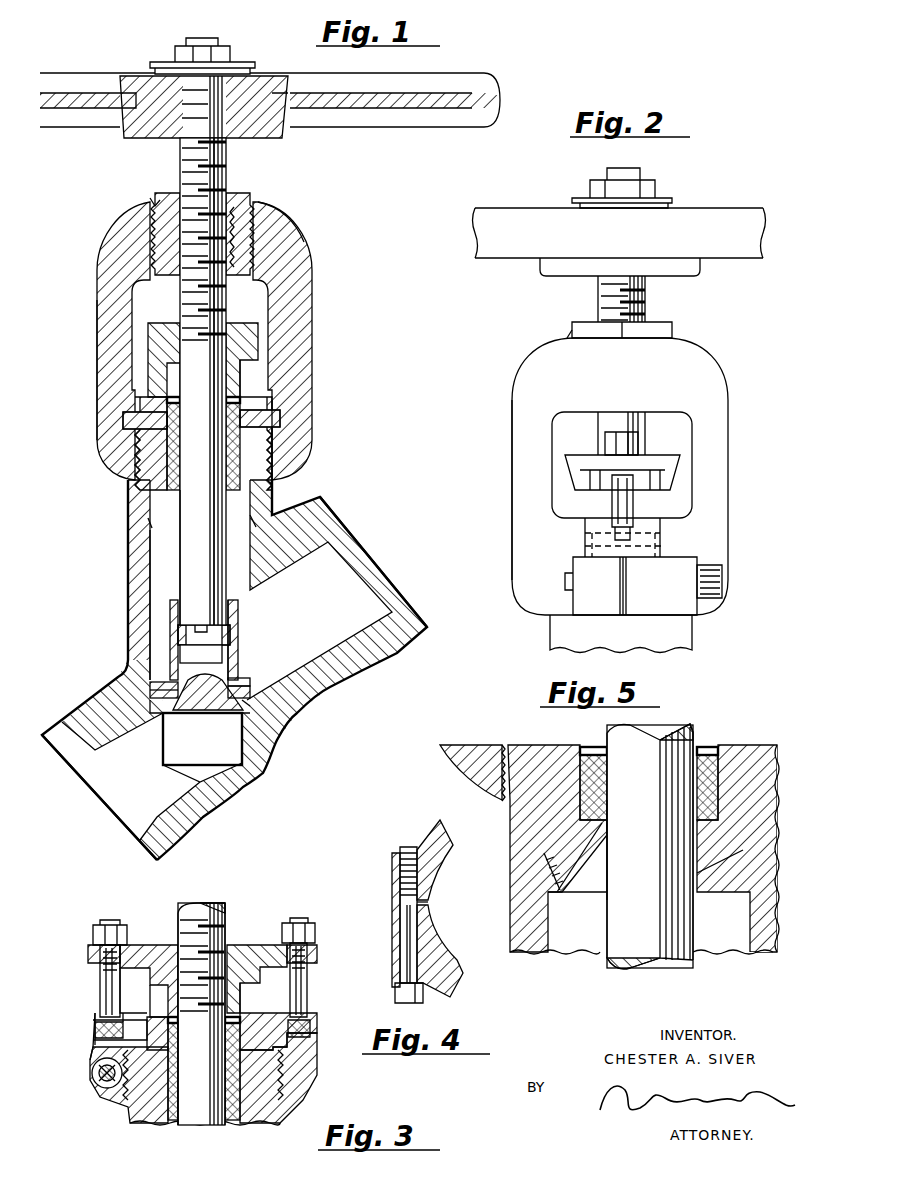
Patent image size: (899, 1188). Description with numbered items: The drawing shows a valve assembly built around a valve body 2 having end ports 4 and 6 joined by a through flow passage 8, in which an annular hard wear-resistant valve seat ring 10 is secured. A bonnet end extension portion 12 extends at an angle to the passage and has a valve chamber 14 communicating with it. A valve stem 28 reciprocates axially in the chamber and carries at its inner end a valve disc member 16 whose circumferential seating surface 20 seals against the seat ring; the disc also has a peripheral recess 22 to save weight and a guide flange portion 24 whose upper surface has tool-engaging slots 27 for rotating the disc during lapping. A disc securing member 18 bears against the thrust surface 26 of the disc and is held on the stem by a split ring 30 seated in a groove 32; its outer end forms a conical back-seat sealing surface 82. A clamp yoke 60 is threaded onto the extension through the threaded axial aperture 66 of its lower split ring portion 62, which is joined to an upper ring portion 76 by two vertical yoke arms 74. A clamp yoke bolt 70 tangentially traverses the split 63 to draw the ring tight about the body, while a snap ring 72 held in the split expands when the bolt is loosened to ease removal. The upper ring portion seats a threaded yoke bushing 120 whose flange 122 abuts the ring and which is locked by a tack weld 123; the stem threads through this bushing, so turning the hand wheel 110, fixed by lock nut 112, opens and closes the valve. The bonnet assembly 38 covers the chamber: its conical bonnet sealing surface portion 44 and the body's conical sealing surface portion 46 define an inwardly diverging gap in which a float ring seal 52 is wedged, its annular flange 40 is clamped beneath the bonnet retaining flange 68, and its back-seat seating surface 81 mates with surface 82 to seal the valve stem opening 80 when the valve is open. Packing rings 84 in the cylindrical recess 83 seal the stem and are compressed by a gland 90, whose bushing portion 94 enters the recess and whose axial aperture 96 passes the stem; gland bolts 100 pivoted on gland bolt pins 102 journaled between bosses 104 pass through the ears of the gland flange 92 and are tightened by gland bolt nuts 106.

In FIG. 1, the valve body 2 is at (257, 780).
In FIG. 1, the end port 4 is at (118, 782).
In FIG. 1, the end port 6 is at (355, 575).
In FIG. 1, the through flow passage 8 is at (207, 742).
In FIG. 1, the valve seat ring 10 is at (277, 733).
In FIG. 1, the bonnet end extension portion 12 is at (137, 571).
In FIG. 3, the bonnet end extension portion 12 is at (128, 1115).
In FIG. 1, the valve chamber 14 is at (173, 557).
In FIG. 1, the valve disc member 16 is at (200, 680).
In FIG. 1, the disc securing member 18 is at (238, 613).
In FIG. 1, the seating surface 20 is at (250, 703).
In FIG. 1, the peripheral recess 22 is at (245, 690).
In FIG. 1, the guide flange portion 24 is at (152, 683).
In FIG. 1, the thrust surface 26 is at (200, 663).
In FIG. 1, the tool-engaging slots 27 is at (240, 680).
In FIG. 1, the valve stem 28 is at (209, 562).
In FIG. 2, the valve stem 28 is at (645, 292).
In FIG. 5, the valve stem 28 is at (653, 897).
In FIG. 3, the valve stem 28 is at (208, 1087).
In FIG. 1, the split ring 30 is at (178, 635).
In FIG. 1, the groove 32 is at (197, 627).
In FIG. 1, the bonnet assembly 38 is at (155, 453).
In FIG. 3, the bonnet assembly 38 is at (158, 1103).
In FIG. 1, the annular flange 40 is at (138, 421).
In FIG. 3, the annular flange 40 is at (142, 1047).
In FIG. 1, the bonnet sealing surface portion 44 is at (252, 523).
In FIG. 5, the bonnet sealing surface portion 44 is at (552, 881).
In FIG. 5, the sealing surface portion 46 is at (565, 873).
In FIG. 1, the float ring seal 52 is at (153, 523).
In FIG. 5, the float ring seal 52 is at (553, 893).
In FIG. 1, the clamp yoke 60 is at (10, 248).
In FIG. 2, the clamp yoke 60 is at (485, 367).
In FIG. 1, the lower split ring portion 62 is at (300, 440).
In FIG. 2, the lower split ring portion 62 is at (527, 582).
In FIG. 5, the lower split ring portion 62 is at (472, 756).
In FIG. 4, the lower split ring portion 62 is at (432, 830).
In FIG. 3, the lower split ring portion 62 is at (112, 1097).
In FIG. 2, the split 63 is at (624, 602).
In FIG. 4, the split 63 is at (420, 904).
In FIG. 1, the threaded axial aperture 66 is at (278, 458).
In FIG. 5, the threaded axial aperture 66 is at (506, 756).
In FIG. 3, the threaded axial aperture 66 is at (283, 1077).
In FIG. 1, the bonnet retaining flange 68 is at (140, 402).
In FIG. 3, the bonnet retaining flange 68 is at (137, 1020).
In FIG. 2, the clamp yoke bolt 70 is at (710, 578).
In FIG. 4, the clamp yoke bolt 70 is at (403, 990).
In FIG. 3, the clamp yoke bolt 70 is at (95, 1075).
In FIG. 2, the snap ring 72 is at (620, 577).
In FIG. 4, the snap ring 72 is at (402, 904).
In FIG. 3, the snap ring 72 is at (100, 1066).
In FIG. 1, the yoke arms 74 is at (107, 299).
In FIG. 2, the yoke arms 74 is at (528, 424).
In FIG. 1, the upper ring portion 76 is at (287, 236).
In FIG. 1, the valve stem opening 80 is at (182, 508).
In FIG. 5, the valve stem opening 80 is at (610, 833).
In FIG. 3, the valve stem opening 80 is at (183, 1123).
In FIG. 1, the back-seat seating surface 81 is at (226, 528).
In FIG. 5, the back-seat seating surface 81 is at (702, 884).
In FIG. 1, the back-seat sealing surface 82 is at (231, 597).
In FIG. 1, the cylindrical recess 83 is at (180, 452).
In FIG. 5, the cylindrical recess 83 is at (609, 753).
In FIG. 3, the cylindrical recess 83 is at (174, 1027).
In FIG. 1, the packing rings 84 is at (177, 420).
In FIG. 5, the packing rings 84 is at (597, 797).
In FIG. 3, the packing rings 84 is at (174, 1060).
In FIG. 1, the gland 90 is at (157, 320).
In FIG. 2, the gland 90 is at (578, 452).
In FIG. 3, the gland 90 is at (152, 942).
In FIG. 1, the gland flange 92 is at (245, 323).
In FIG. 2, the gland flange 92 is at (665, 462).
In FIG. 3, the gland flange 92 is at (252, 957).
In FIG. 1, the bushing portion 94 is at (255, 378).
In FIG. 3, the bushing portion 94 is at (241, 997).
In FIG. 1, the axial aperture 96 is at (182, 377).
In FIG. 2, the gland bolts 100 is at (620, 503).
In FIG. 3, the gland bolts 100 is at (103, 975).
In FIG. 2, the gland bolt pins 102 is at (585, 533).
In FIG. 3, the gland bolt pins 102 is at (98, 1029).
In FIG. 2, the lugs or bosses 104 is at (593, 547).
In FIG. 2, the gland bolt nuts 106 is at (640, 445).
In FIG. 3, the gland bolt nuts 106 is at (96, 938).
In FIG. 1, the hand wheel 110 is at (362, 110).
In FIG. 2, the hand wheel 110 is at (638, 244).
In FIG. 1, the lock nut 112 is at (222, 52).
In FIG. 2, the lock nut 112 is at (648, 186).
In FIG. 1, the yoke bushing 120 is at (236, 242).
In FIG. 1, the flange 122 is at (245, 200).
In FIG. 2, the flange 122 is at (673, 330).
In FIG. 1, the tack weld 123 is at (155, 203).
In FIG. 2, the tack weld 123 is at (571, 334).